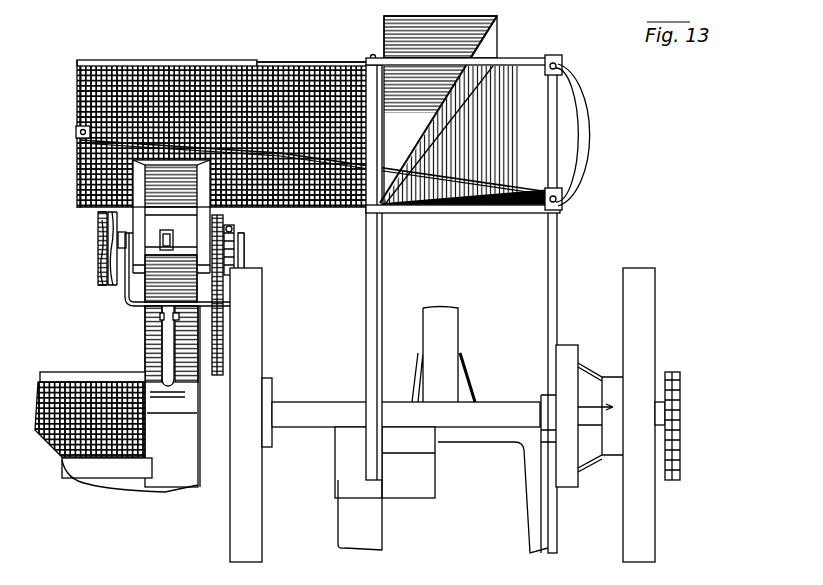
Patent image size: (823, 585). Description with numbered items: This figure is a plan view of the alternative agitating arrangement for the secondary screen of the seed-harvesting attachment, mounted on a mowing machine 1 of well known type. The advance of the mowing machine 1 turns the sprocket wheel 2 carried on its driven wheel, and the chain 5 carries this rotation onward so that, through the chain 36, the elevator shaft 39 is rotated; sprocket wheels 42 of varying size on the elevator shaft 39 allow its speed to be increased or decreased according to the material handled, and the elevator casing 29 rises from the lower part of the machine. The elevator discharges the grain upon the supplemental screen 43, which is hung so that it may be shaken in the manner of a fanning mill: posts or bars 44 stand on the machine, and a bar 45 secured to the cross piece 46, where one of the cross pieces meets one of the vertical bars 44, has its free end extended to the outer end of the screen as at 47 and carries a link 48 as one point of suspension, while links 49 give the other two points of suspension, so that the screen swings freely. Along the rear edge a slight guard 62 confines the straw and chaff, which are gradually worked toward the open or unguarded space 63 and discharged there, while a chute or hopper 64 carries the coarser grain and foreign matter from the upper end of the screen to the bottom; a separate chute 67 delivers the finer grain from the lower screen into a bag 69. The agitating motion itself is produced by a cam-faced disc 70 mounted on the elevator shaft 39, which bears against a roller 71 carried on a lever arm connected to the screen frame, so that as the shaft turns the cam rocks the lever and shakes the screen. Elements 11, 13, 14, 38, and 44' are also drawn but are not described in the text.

The mowing machine 1 is at (498, 375).
The sprocket wheel 2 is at (675, 373).
The chain 5 is at (672, 480).
The trough wall 11 is at (82, 465).
The curved bottom 13 is at (110, 487).
The screen section 14 is at (108, 20).
The elevator casing 29 is at (187, 398).
The chain 36 is at (225, 332).
The small sprocket 38 is at (236, 248).
The elevator shaft 39 is at (237, 243).
The sprocket wheels 42 is at (232, 265).
The supplemental screen 43 is at (292, 65).
The posts or bars 44 is at (570, 130).
The cross bar 44' is at (463, 133).
The bar 45 is at (478, 178).
The cross piece 46 is at (378, 299).
The free end of bar 47 is at (77, 138).
The link 48 is at (76, 132).
The links 49 is at (373, 55).
The guard 62 is at (218, 53).
The open or unguarded space 63 is at (340, 57).
The chute or hopper 64 is at (430, 113).
The separate chute 67 is at (535, 130).
The bag 69 is at (587, 147).
The cam-faced disc 70 is at (97, 240).
The roller 71 is at (98, 217).